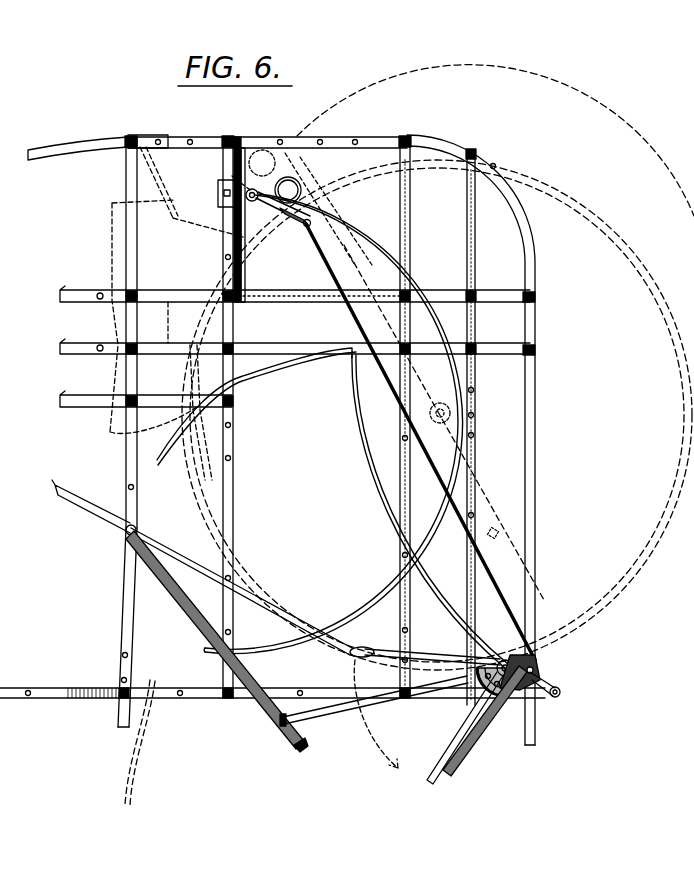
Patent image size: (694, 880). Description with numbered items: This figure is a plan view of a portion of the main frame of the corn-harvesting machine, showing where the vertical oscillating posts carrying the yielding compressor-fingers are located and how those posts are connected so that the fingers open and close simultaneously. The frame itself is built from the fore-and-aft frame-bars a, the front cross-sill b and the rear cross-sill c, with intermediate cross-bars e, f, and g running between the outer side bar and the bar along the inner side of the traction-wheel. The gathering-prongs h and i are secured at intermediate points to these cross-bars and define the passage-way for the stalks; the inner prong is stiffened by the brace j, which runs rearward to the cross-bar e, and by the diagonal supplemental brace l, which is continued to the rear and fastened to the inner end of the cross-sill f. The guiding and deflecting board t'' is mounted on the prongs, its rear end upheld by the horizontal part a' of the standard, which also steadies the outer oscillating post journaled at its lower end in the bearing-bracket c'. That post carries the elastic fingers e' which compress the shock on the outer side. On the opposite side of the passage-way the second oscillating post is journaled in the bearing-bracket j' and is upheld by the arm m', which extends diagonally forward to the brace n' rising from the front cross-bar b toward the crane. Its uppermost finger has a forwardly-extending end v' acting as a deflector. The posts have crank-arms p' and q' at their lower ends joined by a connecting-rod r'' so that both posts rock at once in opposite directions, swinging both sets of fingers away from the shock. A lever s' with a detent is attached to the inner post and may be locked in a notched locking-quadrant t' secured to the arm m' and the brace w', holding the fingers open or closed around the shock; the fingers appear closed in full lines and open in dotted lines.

The fore-and-aft frame-bar a is at (272, 729).
The front cross-sill b is at (126, 598).
The rear cross-sill c is at (485, 440).
The intermediate cross-bar e is at (240, 417).
The intermediate cross-bar f is at (400, 549).
The intermediate cross-bar g is at (475, 454).
The gathering-prong h is at (296, 302).
The gathering-prong i is at (270, 346).
The brace j is at (146, 418).
The diagonal supplemental brace l is at (92, 502).
The horizontal part of standard a' is at (217, 202).
The bearing-bracket c' is at (276, 207).
The elastic fingers e' is at (438, 352).
The crank-arm p' is at (283, 227).
The diagonal rod r'' is at (439, 442).
The lever s' is at (429, 561).
The forwardly-extending end v' is at (256, 406).
The brace n' is at (217, 641).
The arm m' is at (374, 711).
The locking-quadrant t' is at (464, 702).
The bearing-bracket j' is at (542, 659).
The crank-arm q' is at (553, 703).
The lever arm w' is at (452, 728).
The guiding and deflecting board t'' is at (145, 290).